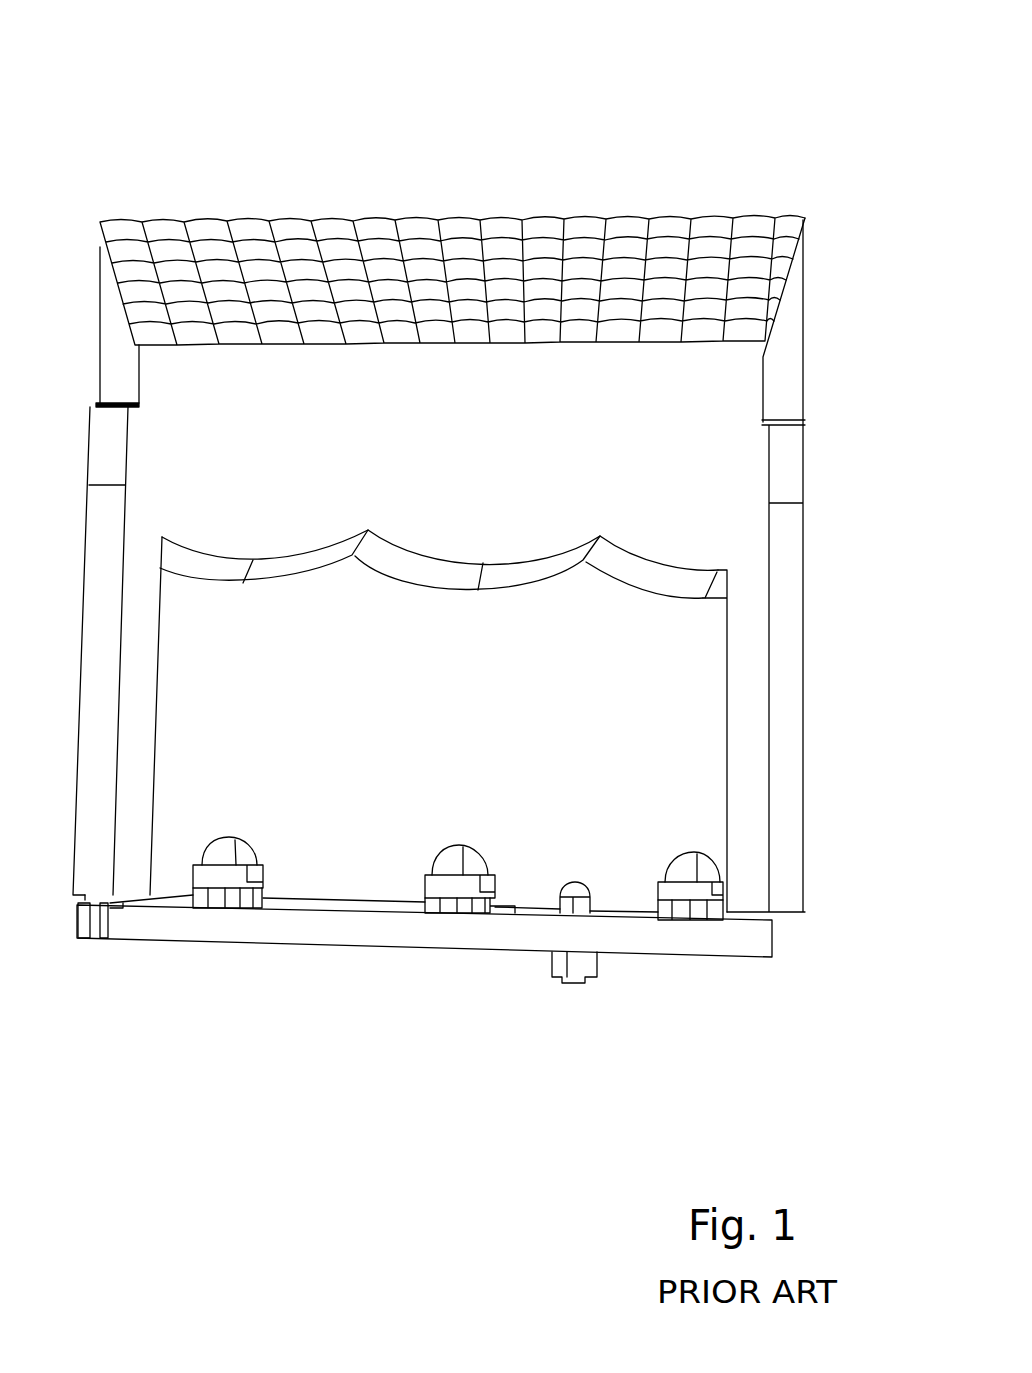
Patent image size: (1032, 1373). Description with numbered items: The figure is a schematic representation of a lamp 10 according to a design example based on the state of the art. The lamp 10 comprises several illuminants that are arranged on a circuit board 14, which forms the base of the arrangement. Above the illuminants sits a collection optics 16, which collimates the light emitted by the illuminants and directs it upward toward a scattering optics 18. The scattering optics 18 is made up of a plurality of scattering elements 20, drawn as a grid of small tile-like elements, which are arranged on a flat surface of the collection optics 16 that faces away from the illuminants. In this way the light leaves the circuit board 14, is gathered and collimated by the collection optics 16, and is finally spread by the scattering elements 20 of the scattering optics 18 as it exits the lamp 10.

The lamp 10 is at (698, 100).
The circuit board 14 is at (392, 935).
The collection optics 16 is at (690, 436).
The scattering optics 18 is at (750, 203).
The scattering elements 20 is at (213, 235).